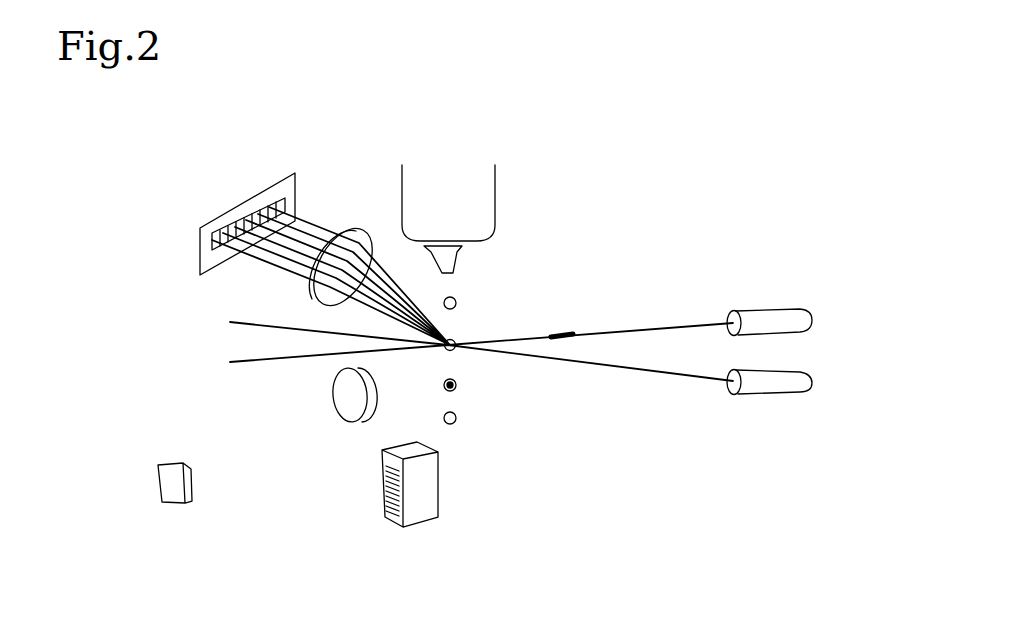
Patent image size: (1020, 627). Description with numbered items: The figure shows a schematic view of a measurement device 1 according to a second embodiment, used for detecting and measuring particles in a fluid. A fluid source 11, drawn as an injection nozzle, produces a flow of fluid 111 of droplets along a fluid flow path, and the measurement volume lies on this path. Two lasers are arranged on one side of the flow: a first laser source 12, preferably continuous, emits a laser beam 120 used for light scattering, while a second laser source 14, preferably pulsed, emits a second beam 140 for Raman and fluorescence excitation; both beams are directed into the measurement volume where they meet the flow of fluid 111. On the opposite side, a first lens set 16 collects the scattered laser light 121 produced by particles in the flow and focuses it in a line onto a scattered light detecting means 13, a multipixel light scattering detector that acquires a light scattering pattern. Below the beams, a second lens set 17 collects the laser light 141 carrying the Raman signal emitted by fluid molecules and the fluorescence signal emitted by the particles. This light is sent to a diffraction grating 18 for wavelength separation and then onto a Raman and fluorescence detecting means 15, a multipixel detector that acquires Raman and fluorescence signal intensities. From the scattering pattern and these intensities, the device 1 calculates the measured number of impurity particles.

The measurement device 1 is at (673, 230).
The fluid source 11 is at (473, 168).
The flow of fluid 111 is at (471, 312).
The first laser source 12 is at (792, 411).
The laser beam 120 is at (557, 380).
The scattered light detecting means 13 is at (232, 206).
The second laser source 14 is at (780, 302).
The second beam 140 is at (562, 328).
The laser light 141 is at (400, 378).
The Raman and fluorescence detecting means 15 is at (425, 535).
The first lens set 16 is at (348, 226).
The second lens set 17 is at (340, 382).
The diffraction grating 18 is at (172, 488).
The scattered laser light 121 is at (370, 314).